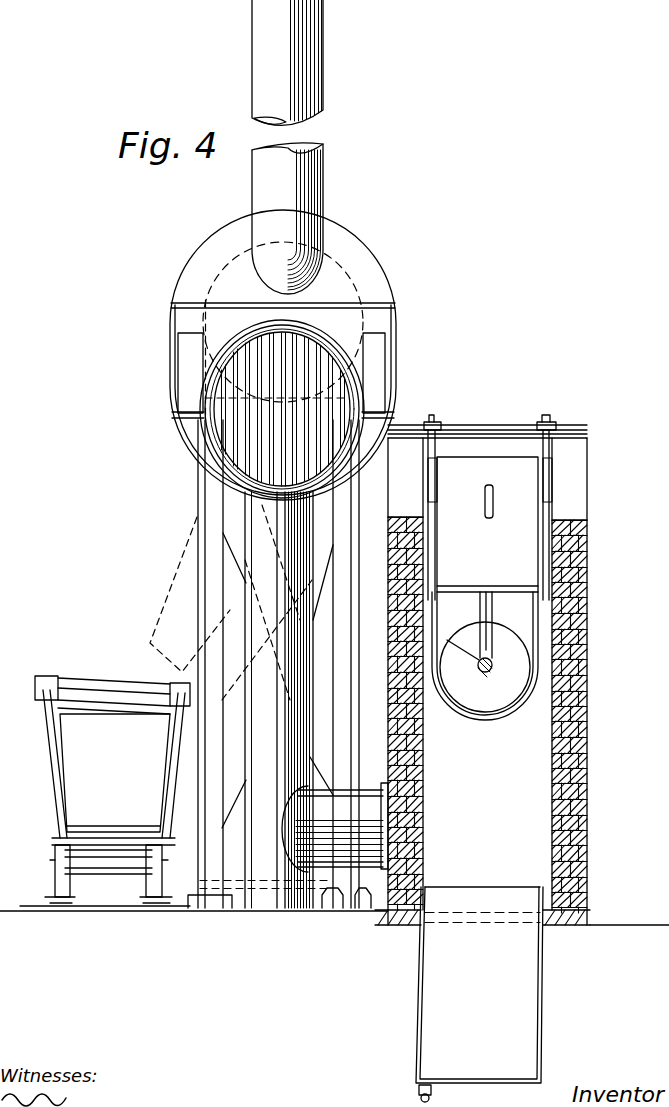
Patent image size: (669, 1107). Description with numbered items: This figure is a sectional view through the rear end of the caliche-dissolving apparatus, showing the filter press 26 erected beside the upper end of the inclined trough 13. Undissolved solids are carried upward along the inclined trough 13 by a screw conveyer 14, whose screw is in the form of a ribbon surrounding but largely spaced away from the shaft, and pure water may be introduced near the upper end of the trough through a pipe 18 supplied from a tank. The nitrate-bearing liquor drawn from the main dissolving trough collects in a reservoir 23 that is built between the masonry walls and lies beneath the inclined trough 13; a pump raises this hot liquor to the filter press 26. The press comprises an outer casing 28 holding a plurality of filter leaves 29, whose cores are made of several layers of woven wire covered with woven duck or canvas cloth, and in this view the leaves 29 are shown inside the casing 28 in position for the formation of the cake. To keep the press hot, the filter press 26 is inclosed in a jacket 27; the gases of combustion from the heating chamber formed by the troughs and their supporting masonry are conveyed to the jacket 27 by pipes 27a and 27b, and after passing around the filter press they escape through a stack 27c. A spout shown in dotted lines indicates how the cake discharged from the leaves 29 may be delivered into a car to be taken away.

The inclined trough 13 is at (502, 720).
The screw conveyer 14 is at (523, 677).
The pipe 18 is at (494, 497).
The reservoir 23 is at (545, 975).
The filter press 26 is at (315, 352).
The jacket 27 is at (397, 350).
The pipe 27a is at (370, 905).
The pipe 27b is at (260, 853).
The stack 27c is at (310, 178).
The outer casing 28 is at (362, 412).
The filter leaves 29 is at (250, 400).